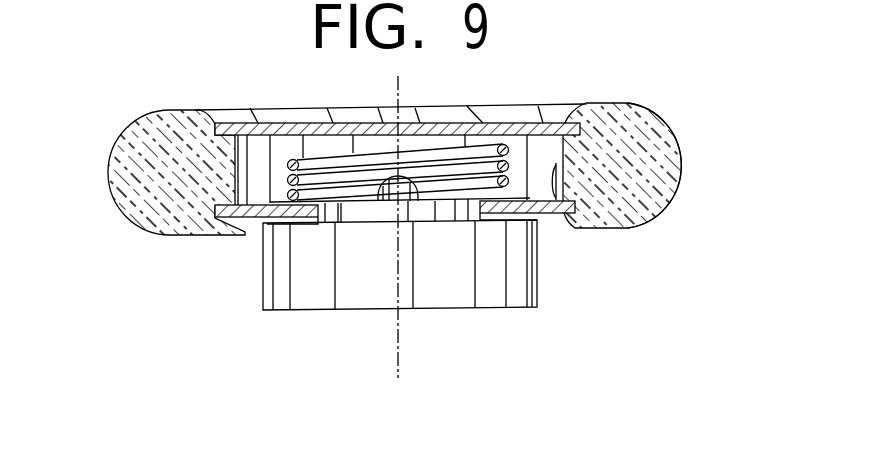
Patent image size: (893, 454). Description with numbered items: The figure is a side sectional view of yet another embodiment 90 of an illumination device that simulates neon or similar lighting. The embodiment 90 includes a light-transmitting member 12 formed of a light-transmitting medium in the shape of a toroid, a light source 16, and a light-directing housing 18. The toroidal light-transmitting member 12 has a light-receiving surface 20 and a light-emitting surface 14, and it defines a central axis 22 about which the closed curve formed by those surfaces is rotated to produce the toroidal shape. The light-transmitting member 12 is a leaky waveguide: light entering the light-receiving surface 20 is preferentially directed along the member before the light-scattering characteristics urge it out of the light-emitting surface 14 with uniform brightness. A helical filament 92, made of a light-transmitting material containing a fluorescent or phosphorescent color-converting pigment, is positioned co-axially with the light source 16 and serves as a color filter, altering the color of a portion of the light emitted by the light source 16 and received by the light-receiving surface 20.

The embodiment 90 is at (100, 84).
The light-transmitting member 12 is at (666, 126).
The light-emitting surface 14 is at (692, 171).
The light source 16 is at (394, 192).
The light-directing housing 18 is at (543, 122).
The light-receiving surface 20 is at (550, 215).
The central axis 22 is at (398, 353).
The helical filament 92 is at (290, 180).